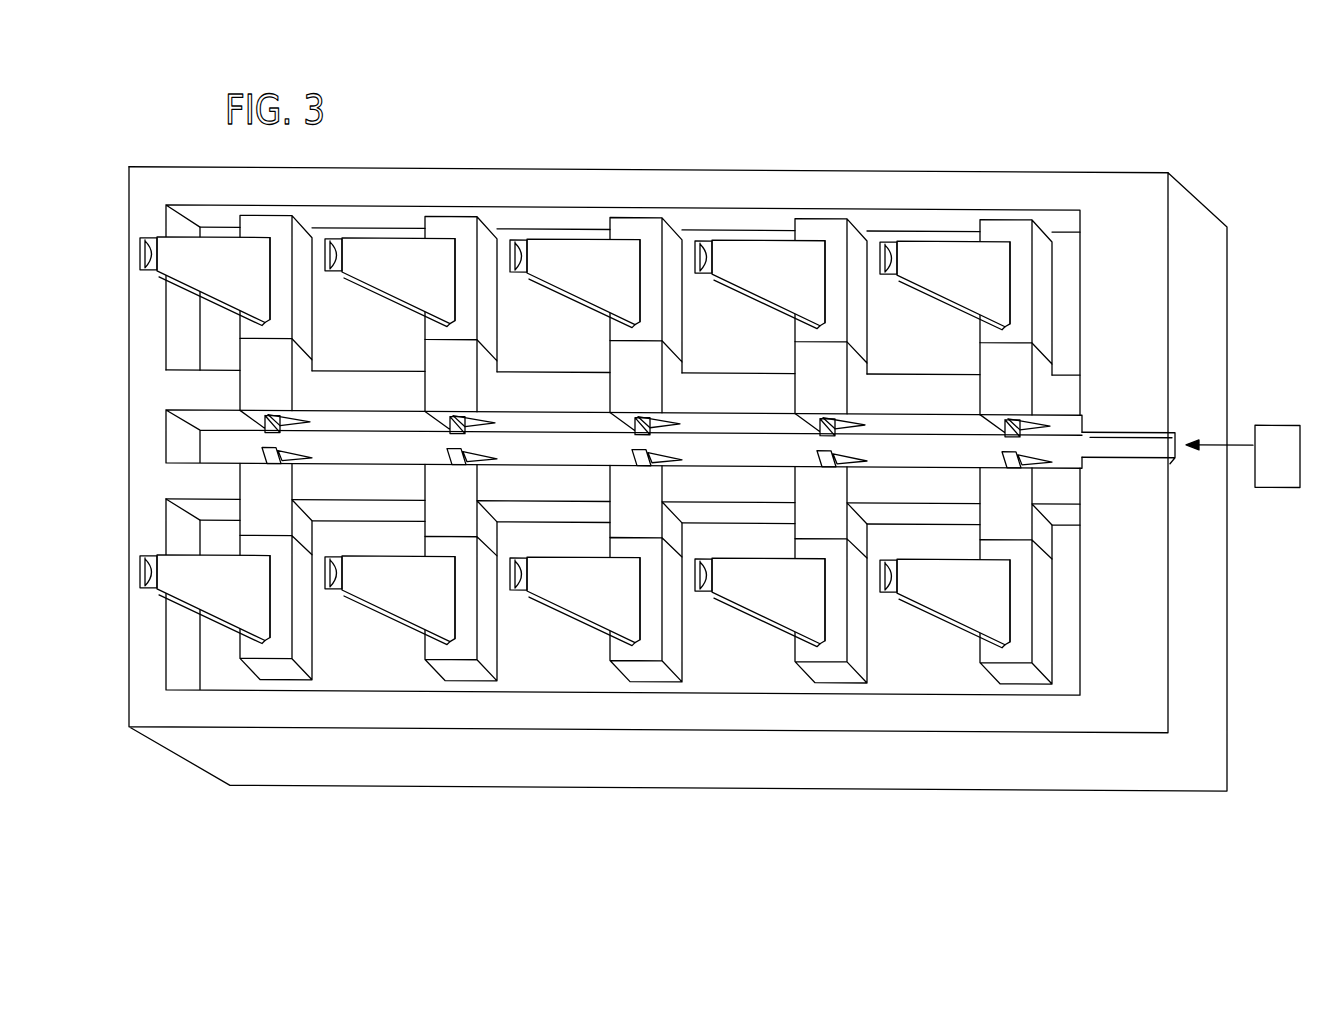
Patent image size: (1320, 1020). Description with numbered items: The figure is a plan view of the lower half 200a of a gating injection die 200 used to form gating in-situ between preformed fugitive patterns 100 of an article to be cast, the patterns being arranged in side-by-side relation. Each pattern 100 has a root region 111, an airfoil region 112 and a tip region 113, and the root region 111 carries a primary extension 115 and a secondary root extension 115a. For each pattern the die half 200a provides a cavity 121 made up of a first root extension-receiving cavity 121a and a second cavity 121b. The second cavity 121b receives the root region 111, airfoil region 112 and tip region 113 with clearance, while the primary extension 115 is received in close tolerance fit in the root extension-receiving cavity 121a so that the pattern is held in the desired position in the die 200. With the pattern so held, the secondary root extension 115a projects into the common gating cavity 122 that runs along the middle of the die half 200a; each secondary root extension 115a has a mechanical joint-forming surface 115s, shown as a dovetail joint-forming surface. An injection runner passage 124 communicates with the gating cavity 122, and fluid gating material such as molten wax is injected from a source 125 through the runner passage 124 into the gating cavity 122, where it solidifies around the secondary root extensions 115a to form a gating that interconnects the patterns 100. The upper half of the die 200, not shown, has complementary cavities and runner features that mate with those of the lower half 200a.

The gating injection die 200 is at (784, 161).
The lower half of gating die 200a is at (990, 181).
The second cavity 121b is at (1070, 246).
The cavity 121 is at (943, 341).
The root extension-receiving cavity 121a is at (1026, 393).
The gating cavity 122 is at (945, 456).
The runner passage 124 is at (1148, 430).
The source 125 is at (1282, 480).
The fugitive pattern 100 is at (980, 276).
The airfoil region 112 is at (590, 599).
The tip region 113 is at (533, 575).
The root region 111 is at (798, 329).
The primary extension 115 is at (612, 350).
The mechanical joint-forming surface 115s is at (277, 452).
The secondary root extension 115a is at (633, 456).